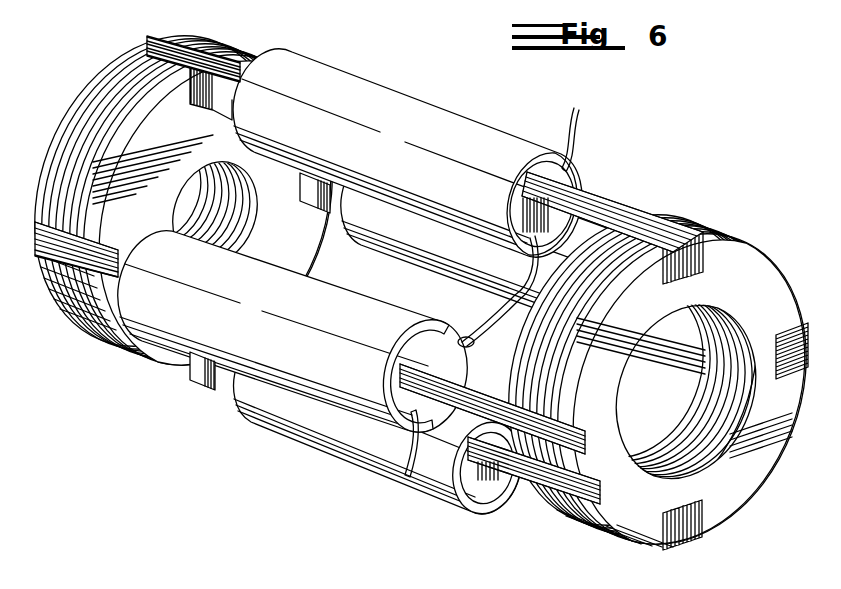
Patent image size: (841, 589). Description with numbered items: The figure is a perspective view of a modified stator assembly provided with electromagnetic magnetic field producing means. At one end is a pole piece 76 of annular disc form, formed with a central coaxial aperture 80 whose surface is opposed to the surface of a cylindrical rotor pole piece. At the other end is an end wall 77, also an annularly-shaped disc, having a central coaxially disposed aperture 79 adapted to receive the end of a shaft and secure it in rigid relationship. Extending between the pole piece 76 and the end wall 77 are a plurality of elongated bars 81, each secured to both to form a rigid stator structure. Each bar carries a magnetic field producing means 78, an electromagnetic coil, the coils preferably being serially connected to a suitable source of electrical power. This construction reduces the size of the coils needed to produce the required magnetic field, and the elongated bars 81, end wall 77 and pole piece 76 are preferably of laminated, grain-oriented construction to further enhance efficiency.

The pole piece 76 is at (755, 258).
The end wall 77 is at (78, 100).
The magnetic field producing means 78 is at (417, 103).
The central coaxially disposed aperture 79 is at (170, 213).
The central coaxial aperture 80 is at (628, 458).
The elongated bar 81 is at (614, 206).